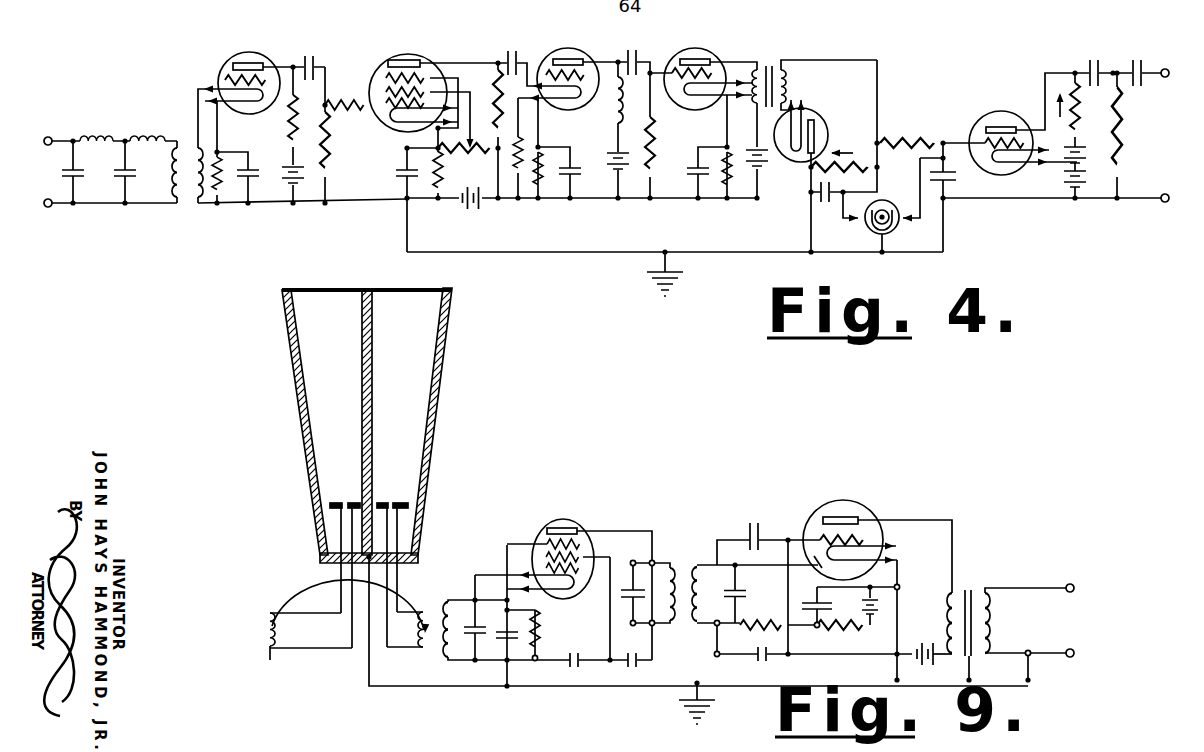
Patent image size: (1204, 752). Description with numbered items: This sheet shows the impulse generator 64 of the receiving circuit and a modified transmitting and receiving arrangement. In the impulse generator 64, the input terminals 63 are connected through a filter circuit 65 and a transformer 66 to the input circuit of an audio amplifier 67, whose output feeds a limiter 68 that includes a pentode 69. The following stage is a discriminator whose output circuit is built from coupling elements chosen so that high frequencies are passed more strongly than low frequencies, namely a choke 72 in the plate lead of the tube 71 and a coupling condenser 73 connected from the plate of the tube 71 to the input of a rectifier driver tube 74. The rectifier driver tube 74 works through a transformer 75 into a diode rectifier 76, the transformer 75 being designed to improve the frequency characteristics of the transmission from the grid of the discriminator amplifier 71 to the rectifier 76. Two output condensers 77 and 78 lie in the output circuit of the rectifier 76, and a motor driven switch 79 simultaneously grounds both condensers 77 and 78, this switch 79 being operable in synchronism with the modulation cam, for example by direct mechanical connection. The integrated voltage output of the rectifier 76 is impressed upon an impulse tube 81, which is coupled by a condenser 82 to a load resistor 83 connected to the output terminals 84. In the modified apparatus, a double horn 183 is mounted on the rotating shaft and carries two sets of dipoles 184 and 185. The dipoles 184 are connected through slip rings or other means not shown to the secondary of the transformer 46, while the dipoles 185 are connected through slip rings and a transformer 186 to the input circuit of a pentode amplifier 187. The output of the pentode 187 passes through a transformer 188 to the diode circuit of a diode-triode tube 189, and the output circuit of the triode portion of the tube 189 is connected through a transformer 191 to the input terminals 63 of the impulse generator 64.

In FIG. 9, the transformer 46 is at (265, 632).
In FIG. 4, the input terminals 63 is at (46, 149).
In FIG. 9, the input terminals 63 is at (1068, 596).
In FIG. 4, the impulse generator 64 is at (602, 61).
In FIG. 4, the filter circuit 65 is at (119, 171).
In FIG. 4, the transformer 66 is at (190, 197).
In FIG. 4, the audio amplifier 67 is at (242, 113).
In FIG. 4, the limiter 68 is at (378, 154).
In FIG. 4, the pentode 69 is at (407, 54).
In FIG. 4, the discriminator amplifier tube 71 is at (566, 50).
In FIG. 4, the choke 72 is at (613, 103).
In FIG. 4, the coupling condenser 73 is at (632, 50).
In FIG. 4, the rectifier driver tube 74 is at (693, 50).
In FIG. 4, the transformer 75 is at (771, 66).
In FIG. 4, the diode rectifier 76 is at (817, 112).
In FIG. 4, the output condenser 77 is at (819, 199).
In FIG. 4, the output condenser 78 is at (948, 178).
In FIG. 4, the motor driven switch 79 is at (876, 224).
In FIG. 4, the impulse tube 81 is at (1000, 111).
In FIG. 4, the condenser 82 is at (1097, 61).
In FIG. 4, the load resistor 83 is at (1120, 150).
In FIG. 4, the output terminals 84 is at (1166, 78).
In FIG. 9, the double horn 183 is at (302, 414).
In FIG. 9, the dipoles 184 is at (352, 502).
In FIG. 9, the dipoles 185 is at (400, 502).
In FIG. 9, the transformer 186 is at (433, 643).
In FIG. 9, the pentode amplifier 187 is at (565, 519).
In FIG. 9, the transformer 188 is at (687, 613).
In FIG. 9, the diode-triode tube 189 is at (844, 513).
In FIG. 9, the transformer 191 is at (970, 588).